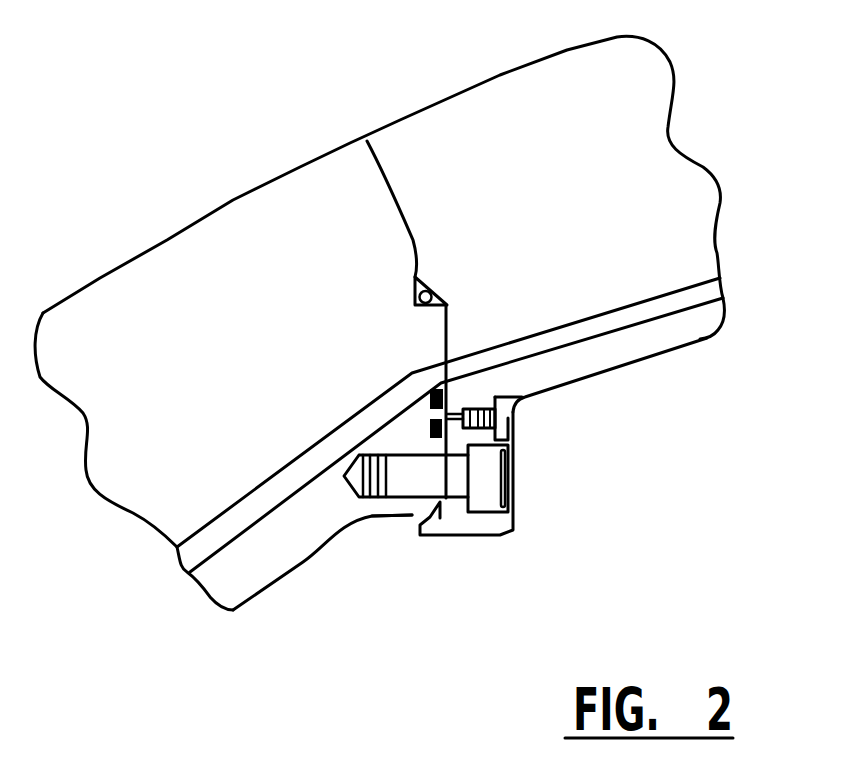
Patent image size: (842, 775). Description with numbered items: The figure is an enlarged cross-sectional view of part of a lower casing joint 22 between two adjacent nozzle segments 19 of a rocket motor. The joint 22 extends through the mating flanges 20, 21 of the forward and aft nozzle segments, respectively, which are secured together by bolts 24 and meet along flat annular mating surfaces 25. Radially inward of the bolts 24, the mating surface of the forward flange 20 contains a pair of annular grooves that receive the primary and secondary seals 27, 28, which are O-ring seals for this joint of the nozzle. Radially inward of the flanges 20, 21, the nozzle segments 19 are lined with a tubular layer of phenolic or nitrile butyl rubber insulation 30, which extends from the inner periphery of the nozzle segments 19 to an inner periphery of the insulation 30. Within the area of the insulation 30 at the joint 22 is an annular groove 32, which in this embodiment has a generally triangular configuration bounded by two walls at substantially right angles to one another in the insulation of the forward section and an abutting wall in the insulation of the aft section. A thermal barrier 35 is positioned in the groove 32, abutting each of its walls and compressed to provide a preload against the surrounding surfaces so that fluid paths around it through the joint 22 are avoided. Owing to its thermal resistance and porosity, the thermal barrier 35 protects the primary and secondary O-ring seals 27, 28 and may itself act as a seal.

The nozzle segment 19 is at (657, 340).
The flange of forward nozzle segment 20 is at (399, 521).
The flange of aft nozzle segment 21 is at (502, 532).
The lower casing joint 22 is at (387, 188).
The bolt 24 is at (451, 486).
The flat annular mating surface 25 is at (448, 377).
The primary seal 27 is at (428, 392).
The secondary seal 28 is at (428, 428).
The insulation 30 is at (67, 320).
The annular groove 32 is at (424, 295).
The thermal barrier 35 is at (430, 296).